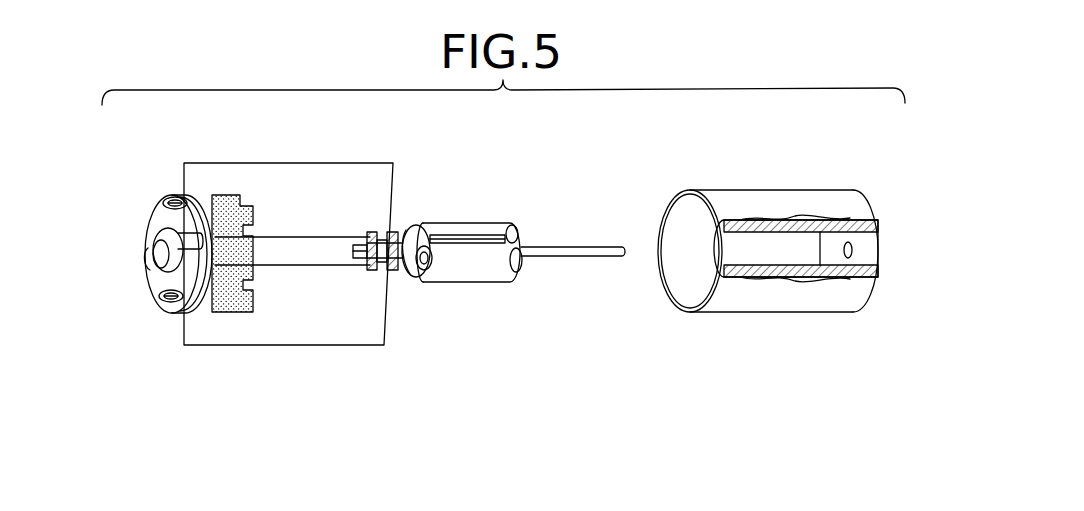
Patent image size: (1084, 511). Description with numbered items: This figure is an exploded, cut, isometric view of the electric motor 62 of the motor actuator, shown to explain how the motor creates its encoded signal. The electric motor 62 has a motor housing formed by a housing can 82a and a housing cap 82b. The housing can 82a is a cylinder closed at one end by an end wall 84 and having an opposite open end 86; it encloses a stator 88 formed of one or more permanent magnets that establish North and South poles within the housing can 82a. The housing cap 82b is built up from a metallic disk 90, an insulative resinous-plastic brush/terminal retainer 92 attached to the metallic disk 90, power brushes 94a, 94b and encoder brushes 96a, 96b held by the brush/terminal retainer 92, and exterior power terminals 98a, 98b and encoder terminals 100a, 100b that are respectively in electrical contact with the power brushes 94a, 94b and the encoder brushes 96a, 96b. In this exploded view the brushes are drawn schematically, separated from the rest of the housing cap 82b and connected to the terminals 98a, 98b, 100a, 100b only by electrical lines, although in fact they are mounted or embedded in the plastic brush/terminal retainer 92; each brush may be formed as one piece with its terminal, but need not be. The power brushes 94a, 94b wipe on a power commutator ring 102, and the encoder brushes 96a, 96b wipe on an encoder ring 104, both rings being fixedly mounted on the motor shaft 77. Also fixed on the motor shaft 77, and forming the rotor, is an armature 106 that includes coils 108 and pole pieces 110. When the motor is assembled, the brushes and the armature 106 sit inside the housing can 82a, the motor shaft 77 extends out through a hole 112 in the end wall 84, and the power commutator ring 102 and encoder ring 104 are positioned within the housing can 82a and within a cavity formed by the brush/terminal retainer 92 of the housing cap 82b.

The electric motor 62 is at (422, 376).
The motor shaft 77 is at (583, 258).
The housing can 82a is at (762, 196).
The housing cap 82b is at (143, 204).
The end wall 84 is at (872, 240).
The open end 86 is at (685, 227).
The stator 88 is at (735, 252).
The metallic disk 90 is at (157, 287).
The brush/terminal retainer 92 is at (213, 197).
The power brush 94a is at (470, 163).
The power brush 94b is at (388, 278).
The encoder brush 96a is at (372, 231).
The encoder brush 96b is at (368, 270).
The power terminal 98a is at (173, 198).
The power terminal 98b is at (173, 308).
The encoder terminal 100a is at (174, 234).
The encoder terminal 100b is at (143, 266).
The power commutator ring 102 is at (440, 228).
The encoder ring 104 is at (352, 243).
The armature 106 is at (487, 227).
The coils 108 is at (523, 272).
The pole pieces 110 is at (480, 274).
The hole 112 is at (855, 250).